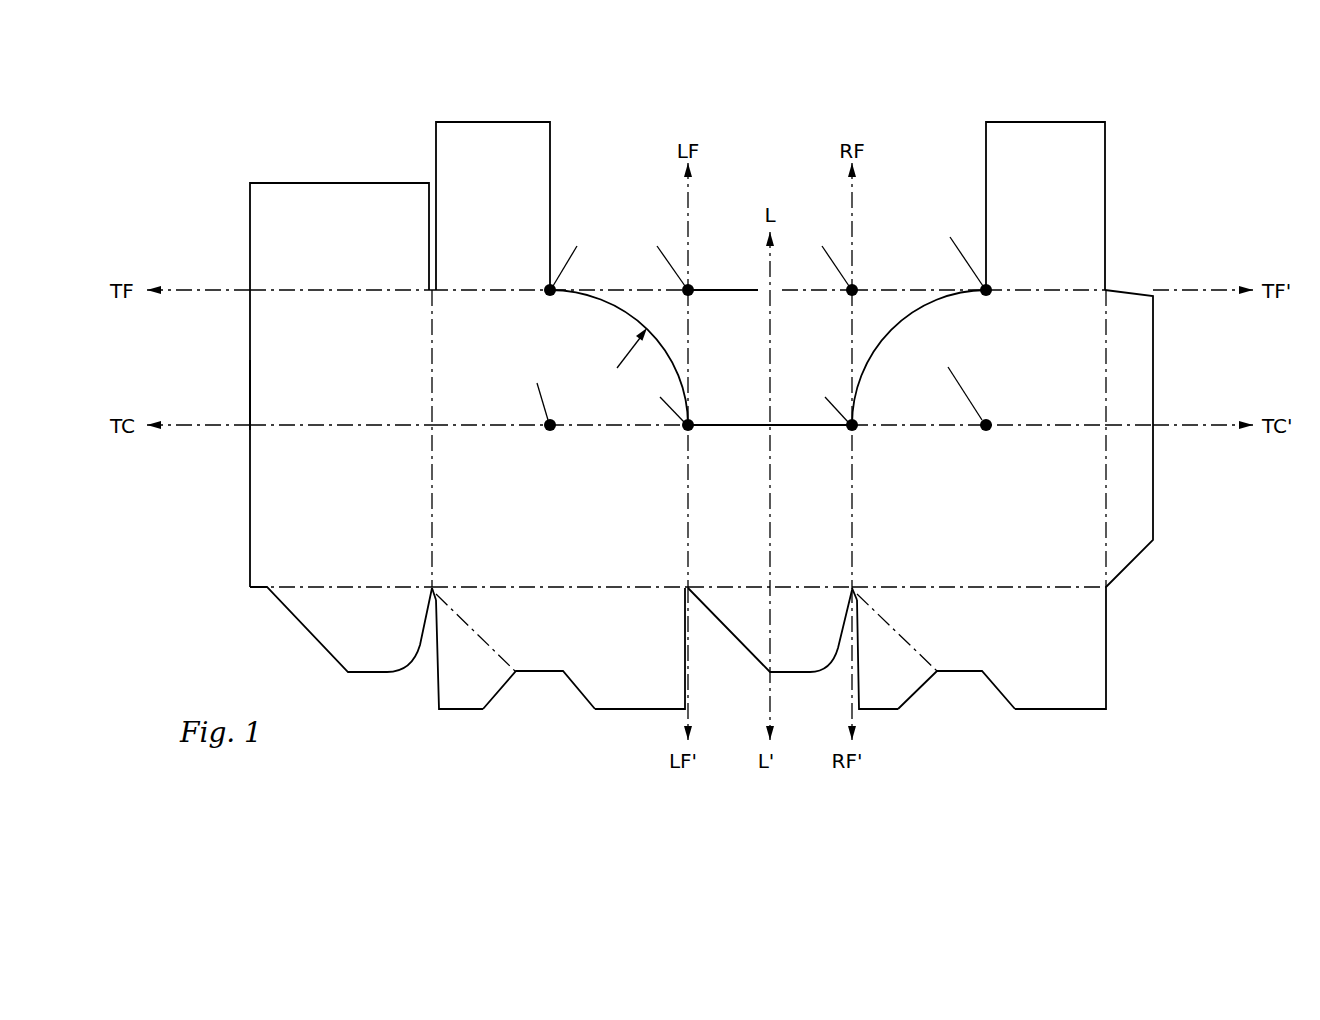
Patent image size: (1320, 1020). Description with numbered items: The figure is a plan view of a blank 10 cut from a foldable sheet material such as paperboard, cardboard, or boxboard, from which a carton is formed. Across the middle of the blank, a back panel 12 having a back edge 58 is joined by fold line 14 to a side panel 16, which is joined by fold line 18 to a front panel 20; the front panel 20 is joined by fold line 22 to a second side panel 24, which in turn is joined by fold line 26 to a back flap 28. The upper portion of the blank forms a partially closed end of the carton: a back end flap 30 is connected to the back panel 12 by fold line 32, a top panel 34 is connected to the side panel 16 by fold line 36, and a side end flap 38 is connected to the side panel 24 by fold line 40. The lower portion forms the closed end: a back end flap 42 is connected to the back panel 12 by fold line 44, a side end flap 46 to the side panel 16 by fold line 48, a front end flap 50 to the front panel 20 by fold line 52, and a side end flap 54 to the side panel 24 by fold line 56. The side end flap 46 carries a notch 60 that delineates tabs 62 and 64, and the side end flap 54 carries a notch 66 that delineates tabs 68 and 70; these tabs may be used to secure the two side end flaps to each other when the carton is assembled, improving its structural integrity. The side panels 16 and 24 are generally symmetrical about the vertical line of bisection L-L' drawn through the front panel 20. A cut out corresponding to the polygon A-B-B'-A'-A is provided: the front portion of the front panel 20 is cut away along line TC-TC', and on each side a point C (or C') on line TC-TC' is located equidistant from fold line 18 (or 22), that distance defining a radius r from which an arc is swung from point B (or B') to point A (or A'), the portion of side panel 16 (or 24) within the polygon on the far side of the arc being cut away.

The blank 10 is at (399, 147).
The back panel 12 is at (341, 438).
The fold line 14 is at (430, 480).
The side panel 16 is at (560, 378).
The fold line 18 is at (656, 438).
The front panel 20 is at (770, 392).
The fold line 22 is at (853, 470).
The side panel 24 is at (979, 390).
The fold line 26 is at (1108, 337).
The back flap 28 is at (1129, 438).
The back end flap 30 is at (339, 236).
The fold line 32 is at (341, 324).
The top panel 34 is at (493, 206).
The fold line 36 is at (494, 293).
The side end flap 38 is at (1045, 206).
The fold line 40 is at (1070, 292).
The back end flap 42 is at (341, 629).
The fold line 44 is at (393, 587).
The side end flap 46 is at (558, 687).
The fold line 48 is at (633, 587).
The front end flap 50 is at (770, 630).
The fold line 52 is at (817, 587).
The side end flap 54 is at (979, 685).
The fold line 56 is at (1013, 586).
The back edge 58 is at (250, 393).
The notch 60 is at (526, 696).
The tab 62 is at (472, 685).
The tab 64 is at (608, 685).
The notch 66 is at (962, 698).
The tab 68 is at (886, 688).
The tab 70 is at (1052, 678).